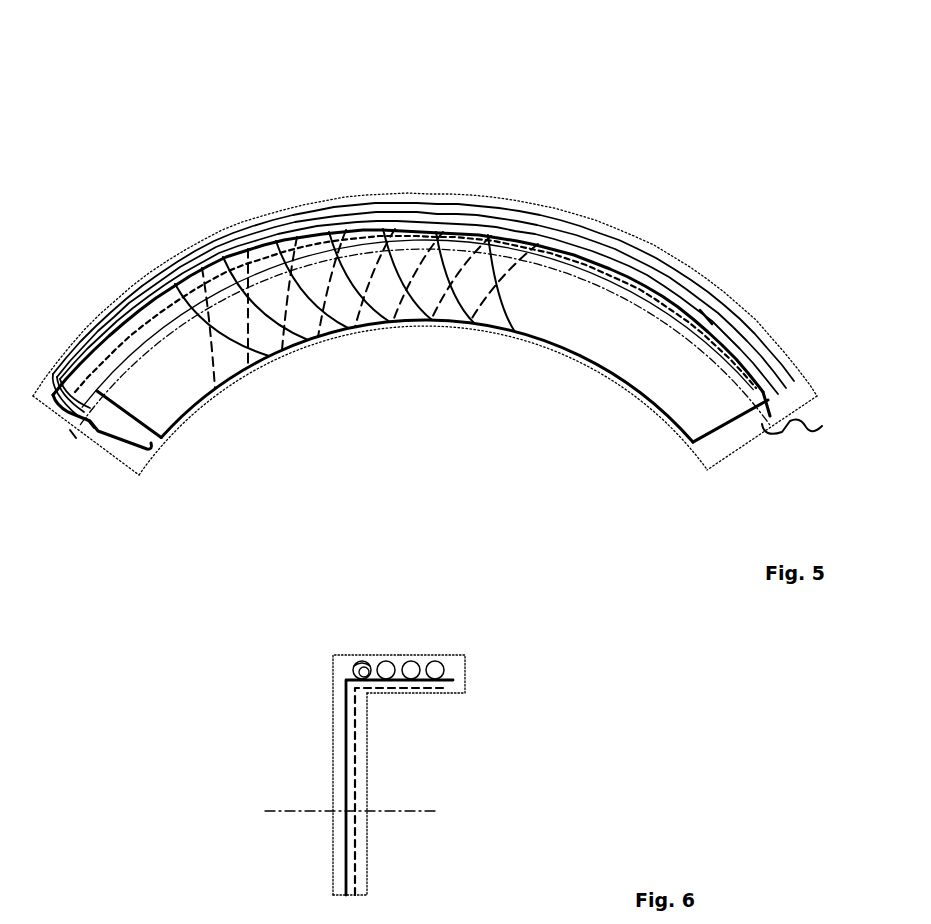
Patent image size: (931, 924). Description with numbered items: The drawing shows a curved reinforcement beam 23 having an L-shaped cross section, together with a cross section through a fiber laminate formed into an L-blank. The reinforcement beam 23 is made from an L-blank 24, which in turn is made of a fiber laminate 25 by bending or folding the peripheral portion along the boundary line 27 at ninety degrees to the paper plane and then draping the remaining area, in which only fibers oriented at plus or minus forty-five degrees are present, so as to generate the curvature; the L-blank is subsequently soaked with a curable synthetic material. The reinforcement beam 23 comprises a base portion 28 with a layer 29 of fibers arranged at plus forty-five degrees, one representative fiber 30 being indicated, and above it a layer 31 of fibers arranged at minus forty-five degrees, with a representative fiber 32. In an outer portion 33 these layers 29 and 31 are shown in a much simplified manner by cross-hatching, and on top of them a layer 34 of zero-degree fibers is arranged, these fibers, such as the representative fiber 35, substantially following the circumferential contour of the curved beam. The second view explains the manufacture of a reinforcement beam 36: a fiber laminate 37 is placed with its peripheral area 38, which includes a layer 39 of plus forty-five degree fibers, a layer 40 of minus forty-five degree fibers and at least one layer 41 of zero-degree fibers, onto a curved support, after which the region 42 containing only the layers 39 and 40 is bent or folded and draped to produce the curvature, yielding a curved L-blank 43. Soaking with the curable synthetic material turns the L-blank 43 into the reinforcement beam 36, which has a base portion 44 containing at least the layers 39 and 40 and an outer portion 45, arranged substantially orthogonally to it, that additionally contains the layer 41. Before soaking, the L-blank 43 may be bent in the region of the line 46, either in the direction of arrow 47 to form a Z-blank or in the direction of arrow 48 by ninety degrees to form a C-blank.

In FIG. 5, the reinforcement beam 23 is at (430, 122).
In FIG. 5, the L-blank 24 is at (95, 454).
In FIG. 5, the fiber laminate 25 is at (102, 420).
In FIG. 5, the boundary line 27 is at (793, 447).
In FIG. 5, the base portion 28 is at (621, 349).
In FIG. 5, the layer 29 is at (190, 300).
In FIG. 5, the fiber 30 is at (214, 358).
In FIG. 5, the layer 31 is at (217, 290).
In FIG. 5, the fiber 32 is at (262, 336).
In FIG. 5, the outer portion 33 is at (799, 425).
In FIG. 5, the layer 34 is at (624, 239).
In FIG. 5, the fiber 35 is at (545, 216).
In FIG. 6, the reinforcement beam 36 is at (413, 599).
In FIG. 6, the fiber laminate 37 is at (465, 662).
In FIG. 6, the peripheral area 38 is at (459, 632).
In FIG. 6, the layer 39 is at (346, 682).
In FIG. 6, the layer 40 is at (354, 735).
In FIG. 6, the layer 41 is at (336, 660).
In FIG. 6, the region 42 is at (369, 776).
In FIG. 6, the L-blank 43 is at (427, 653).
In FIG. 6, the base portion 44 is at (328, 762).
In FIG. 6, the outer portion 45 is at (383, 650).
In FIG. 6, the line 46 is at (265, 810).
In FIG. 6, the arrow 47 is at (220, 822).
In FIG. 6, the arrow 48 is at (405, 850).